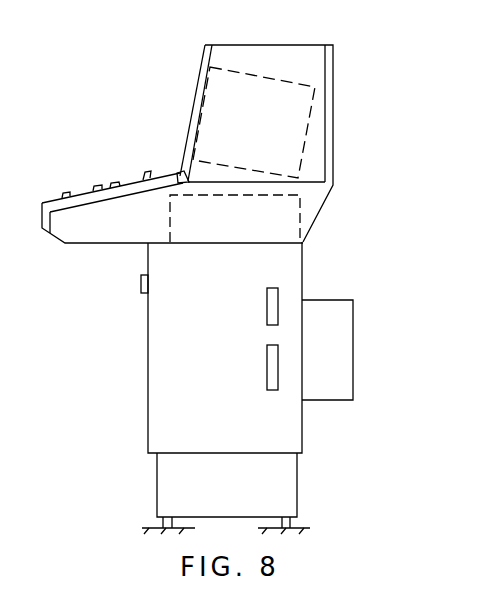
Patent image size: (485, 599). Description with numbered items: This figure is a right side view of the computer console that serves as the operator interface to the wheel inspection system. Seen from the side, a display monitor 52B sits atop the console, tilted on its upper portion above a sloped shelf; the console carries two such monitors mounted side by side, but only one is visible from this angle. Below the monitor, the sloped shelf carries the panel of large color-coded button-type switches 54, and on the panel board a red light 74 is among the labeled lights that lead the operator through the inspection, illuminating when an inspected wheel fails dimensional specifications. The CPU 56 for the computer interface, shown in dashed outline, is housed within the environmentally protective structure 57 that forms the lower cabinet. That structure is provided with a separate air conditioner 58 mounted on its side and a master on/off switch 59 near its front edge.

The display monitor 52B is at (303, 158).
The panel of large color-coded button-type switches 54 is at (92, 190).
The red light 74 is at (145, 173).
The CPU 56 is at (303, 218).
The environmentally protective structure 57 is at (148, 394).
The air conditioner 58 is at (330, 299).
The master on/off switch 59 is at (140, 290).